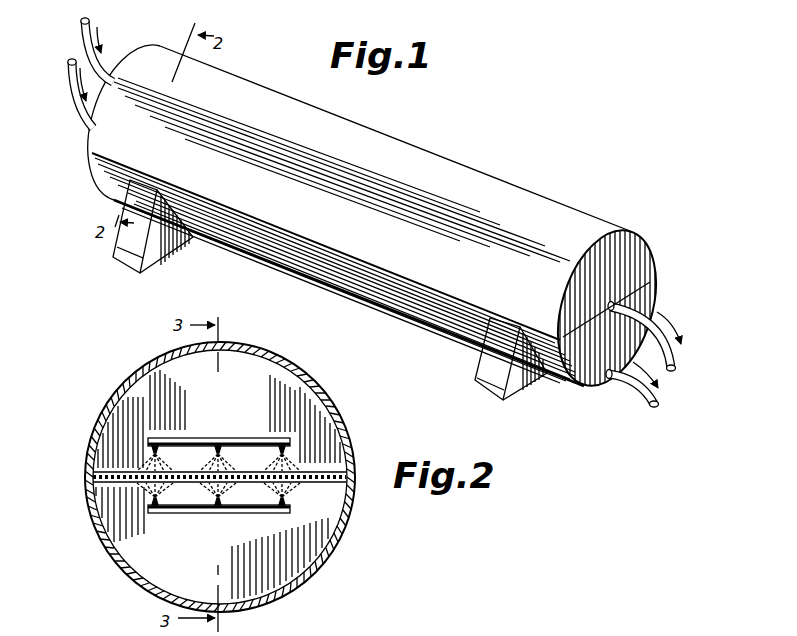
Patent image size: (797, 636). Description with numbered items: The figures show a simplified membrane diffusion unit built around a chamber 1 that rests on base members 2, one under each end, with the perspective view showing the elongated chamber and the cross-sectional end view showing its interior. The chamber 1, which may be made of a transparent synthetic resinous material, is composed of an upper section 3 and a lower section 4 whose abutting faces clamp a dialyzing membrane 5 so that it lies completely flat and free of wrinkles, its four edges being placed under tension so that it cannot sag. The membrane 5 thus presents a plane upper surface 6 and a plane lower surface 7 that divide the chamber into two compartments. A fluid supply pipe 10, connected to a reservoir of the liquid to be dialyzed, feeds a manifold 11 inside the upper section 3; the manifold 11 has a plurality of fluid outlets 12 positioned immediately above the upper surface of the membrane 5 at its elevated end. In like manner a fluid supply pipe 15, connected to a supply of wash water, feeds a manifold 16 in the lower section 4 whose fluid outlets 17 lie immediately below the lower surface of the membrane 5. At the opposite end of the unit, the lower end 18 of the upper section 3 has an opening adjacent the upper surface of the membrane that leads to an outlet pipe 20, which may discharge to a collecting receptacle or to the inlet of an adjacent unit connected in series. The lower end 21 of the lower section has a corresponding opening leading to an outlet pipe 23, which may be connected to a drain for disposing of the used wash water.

In FIG. 1, the chamber 1 is at (478, 170).
In FIG. 2, the chamber 1 is at (104, 399).
In FIG. 1, the base member 2 is at (160, 256).
In FIG. 1, the upper section 3 is at (393, 142).
In FIG. 2, the upper section 3 is at (322, 396).
In FIG. 1, the lower section 4 is at (308, 277).
In FIG. 2, the lower section 4 is at (320, 571).
In FIG. 1, the dialyzing membrane 5 is at (650, 282).
In FIG. 2, the dialyzing membrane 5 is at (93, 475).
In FIG. 2, the upper surface 6 is at (330, 472).
In FIG. 2, the lower surface 7 is at (328, 484).
In FIG. 1, the fluid supply pipe 10 is at (80, 22).
In FIG. 2, the manifold 11 is at (190, 438).
In FIG. 2, the fluid outlets 12 is at (150, 453).
In FIG. 1, the fluid supply pipe 15 is at (70, 69).
In FIG. 2, the manifold 16 is at (164, 514).
In FIG. 2, the fluid outlets 17 is at (258, 513).
In FIG. 1, the lower end 18 is at (646, 254).
In FIG. 1, the outlet pipe 20 is at (675, 363).
In FIG. 1, the lower end 21 is at (645, 300).
In FIG. 1, the outlet pipe 23 is at (660, 404).